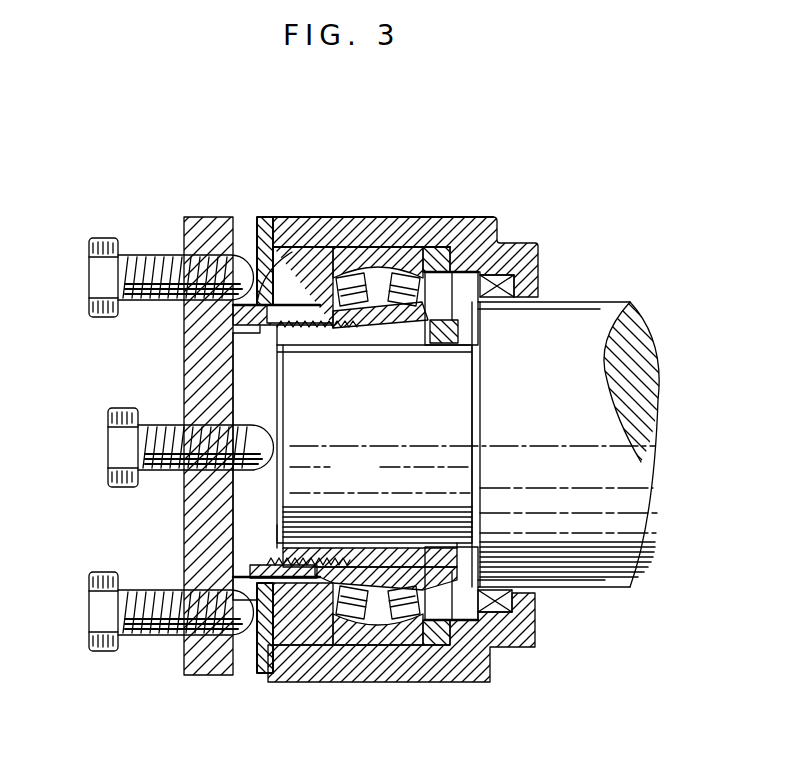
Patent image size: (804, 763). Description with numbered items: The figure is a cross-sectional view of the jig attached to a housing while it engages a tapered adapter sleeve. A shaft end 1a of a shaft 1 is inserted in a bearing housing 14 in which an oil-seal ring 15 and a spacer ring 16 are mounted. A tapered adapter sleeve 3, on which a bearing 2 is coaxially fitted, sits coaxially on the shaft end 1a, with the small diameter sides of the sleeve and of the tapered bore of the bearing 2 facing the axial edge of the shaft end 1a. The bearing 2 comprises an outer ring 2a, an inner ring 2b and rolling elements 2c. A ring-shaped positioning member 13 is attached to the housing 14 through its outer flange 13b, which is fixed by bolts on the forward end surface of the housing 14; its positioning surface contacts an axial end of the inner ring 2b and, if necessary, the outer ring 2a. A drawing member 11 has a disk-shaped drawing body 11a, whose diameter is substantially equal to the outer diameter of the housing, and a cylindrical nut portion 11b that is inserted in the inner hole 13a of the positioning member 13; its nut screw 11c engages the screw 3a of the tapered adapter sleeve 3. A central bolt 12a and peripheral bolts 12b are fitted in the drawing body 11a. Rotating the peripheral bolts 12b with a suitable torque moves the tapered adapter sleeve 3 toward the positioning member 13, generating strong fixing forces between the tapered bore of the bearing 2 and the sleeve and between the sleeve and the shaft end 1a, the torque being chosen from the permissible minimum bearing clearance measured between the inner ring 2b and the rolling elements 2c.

The shaft 1 is at (597, 318).
The shaft end 1a is at (445, 483).
The bearing 2 is at (412, 245).
The outer ring 2a is at (363, 255).
The inner ring 2b is at (377, 320).
The rolling elements 2c is at (453, 277).
The tapered adapter sleeve 3 is at (422, 337).
The screw 3a is at (330, 325).
The drawing member 11 is at (182, 378).
The drawing body 11a is at (200, 497).
The cylindrical nut portion 11b is at (250, 566).
The nut screw 11c is at (262, 560).
The central bolt 12a is at (110, 447).
The peripheral bolts 12b is at (152, 258).
The positioning member 13 is at (310, 260).
The inner hole 13a is at (262, 245).
The outer flange 13b is at (262, 217).
The bearing housing 14 is at (393, 220).
The oil-seal ring 15 is at (503, 278).
The spacer ring 16 is at (443, 258).